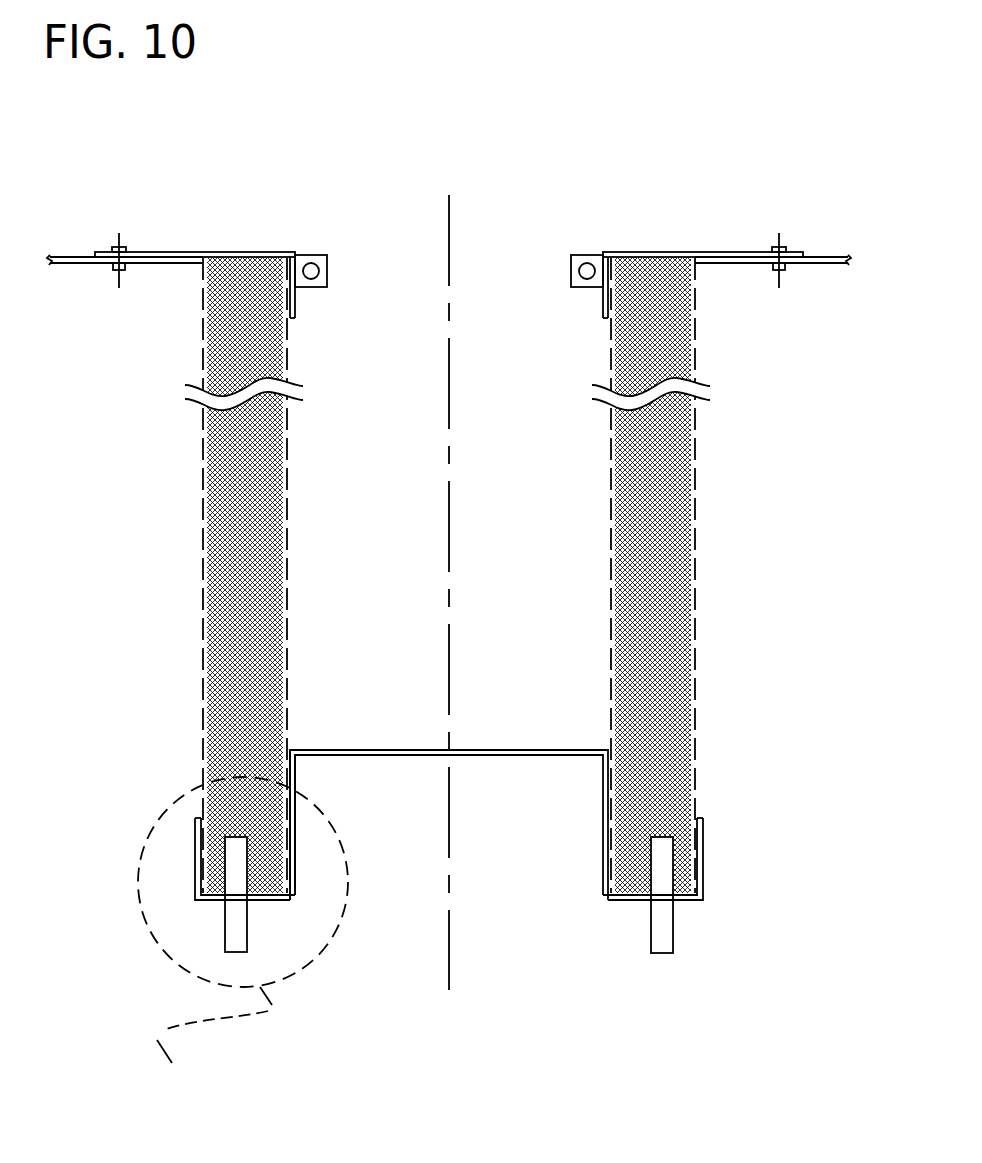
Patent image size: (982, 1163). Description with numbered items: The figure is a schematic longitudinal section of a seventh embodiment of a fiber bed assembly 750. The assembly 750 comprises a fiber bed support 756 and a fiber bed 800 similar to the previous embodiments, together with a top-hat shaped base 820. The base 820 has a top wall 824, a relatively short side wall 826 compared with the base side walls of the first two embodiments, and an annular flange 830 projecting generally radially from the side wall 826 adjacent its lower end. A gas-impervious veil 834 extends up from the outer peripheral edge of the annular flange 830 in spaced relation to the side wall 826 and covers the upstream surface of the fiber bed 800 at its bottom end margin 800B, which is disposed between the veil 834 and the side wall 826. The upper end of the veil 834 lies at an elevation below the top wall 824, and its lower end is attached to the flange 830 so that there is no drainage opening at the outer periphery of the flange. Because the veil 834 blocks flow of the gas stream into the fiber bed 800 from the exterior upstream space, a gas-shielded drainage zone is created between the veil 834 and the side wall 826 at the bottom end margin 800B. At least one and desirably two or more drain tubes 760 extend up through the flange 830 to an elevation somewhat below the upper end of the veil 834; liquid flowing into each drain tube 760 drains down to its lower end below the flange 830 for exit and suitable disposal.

The fiber bed assembly 750 is at (440, 589).
The fiber bed support 756 is at (697, 337).
The fiber bed 800 is at (670, 462).
The bottom end margin of the fiber bed 800B is at (263, 867).
The top-hat shaped base 820 is at (527, 750).
The top wall 824 is at (387, 750).
The side wall 826 is at (292, 840).
The gas-impervious veil 834 is at (197, 863).
The drain tube 760 is at (223, 942).
The annular flange 830 is at (260, 903).